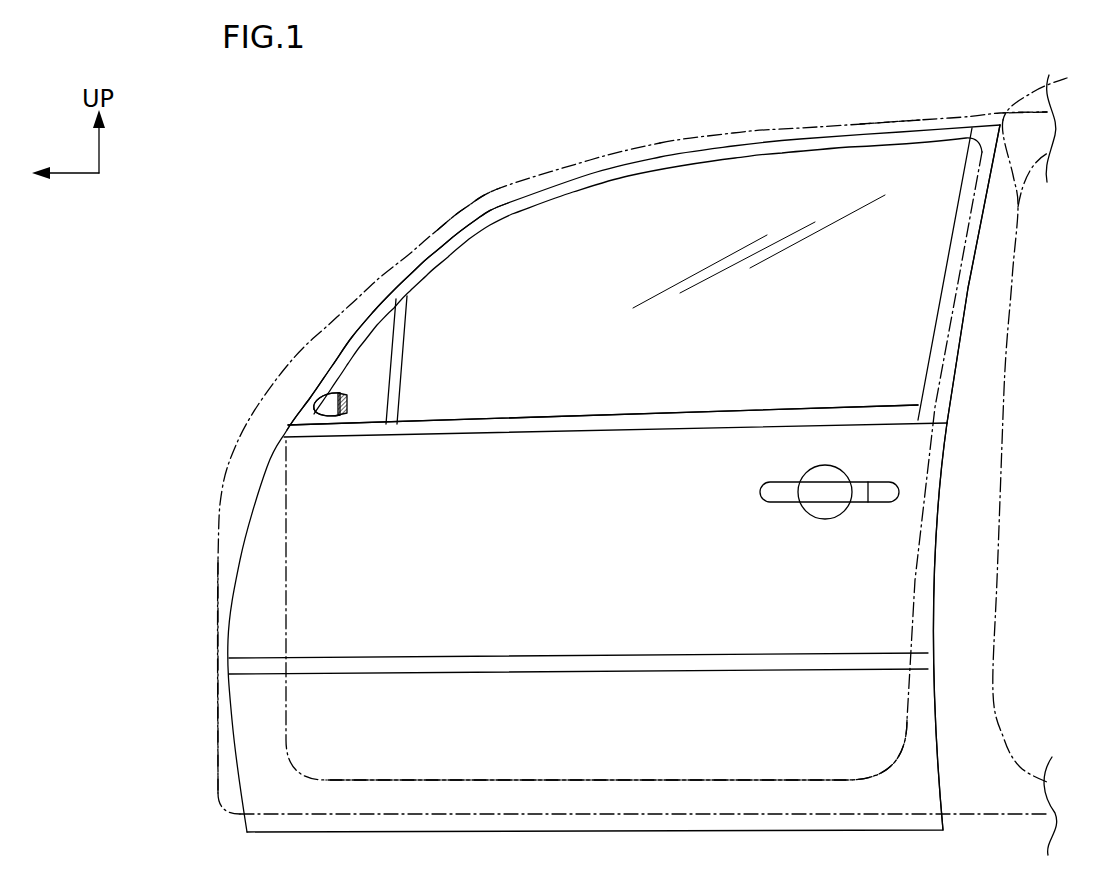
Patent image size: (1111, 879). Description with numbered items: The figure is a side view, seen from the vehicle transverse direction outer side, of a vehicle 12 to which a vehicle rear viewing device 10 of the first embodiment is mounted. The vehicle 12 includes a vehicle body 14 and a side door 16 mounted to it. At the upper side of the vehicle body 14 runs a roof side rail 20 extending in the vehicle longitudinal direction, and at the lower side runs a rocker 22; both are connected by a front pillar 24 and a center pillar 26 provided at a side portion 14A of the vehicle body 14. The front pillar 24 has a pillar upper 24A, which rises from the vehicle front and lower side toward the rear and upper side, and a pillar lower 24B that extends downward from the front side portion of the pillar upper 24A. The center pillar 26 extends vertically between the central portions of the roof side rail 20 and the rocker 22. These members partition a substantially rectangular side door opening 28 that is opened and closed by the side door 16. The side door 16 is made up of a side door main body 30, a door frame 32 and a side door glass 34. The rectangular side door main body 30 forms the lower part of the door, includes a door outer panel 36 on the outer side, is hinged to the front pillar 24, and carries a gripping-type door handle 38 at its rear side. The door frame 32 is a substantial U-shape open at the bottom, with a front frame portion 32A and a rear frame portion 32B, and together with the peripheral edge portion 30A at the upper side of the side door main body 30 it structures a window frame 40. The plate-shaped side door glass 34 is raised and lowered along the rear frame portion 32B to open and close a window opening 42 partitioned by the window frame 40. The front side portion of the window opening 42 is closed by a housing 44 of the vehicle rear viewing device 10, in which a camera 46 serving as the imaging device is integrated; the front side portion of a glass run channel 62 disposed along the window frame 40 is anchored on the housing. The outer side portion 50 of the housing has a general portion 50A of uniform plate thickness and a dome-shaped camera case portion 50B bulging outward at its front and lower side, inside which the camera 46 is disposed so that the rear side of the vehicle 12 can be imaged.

The vehicle rear viewing device 10 is at (383, 243).
The vehicle 12 is at (970, 88).
The vehicle body 14 is at (793, 119).
The side portion 14A is at (880, 120).
The side door 16 is at (972, 436).
The roof side rail 20 is at (1048, 126).
The rocker 22 is at (490, 797).
The front pillar 24 is at (298, 329).
The pillar upper 24A is at (590, 160).
The pillar lower 24B is at (248, 635).
The center pillar 26 is at (985, 333).
The side door opening 28 is at (913, 583).
The side door main body 30 is at (812, 829).
The peripheral edge portion 30A is at (593, 453).
The door frame 32 is at (548, 180).
The front frame portion 32A is at (483, 212).
The rear frame portion 32B is at (972, 228).
The side door glass 34 is at (902, 270).
The door outer panel 36 is at (878, 704).
The door handle 38 is at (785, 493).
The window frame 40 is at (636, 219).
The window opening 42 is at (462, 237).
The housing 44 is at (368, 437).
The camera 46 is at (348, 402).
The outer side portion 50 is at (376, 362).
The general portion 50A is at (343, 372).
The camera case portion 50B is at (328, 410).
The glass run channel 62 is at (398, 325).